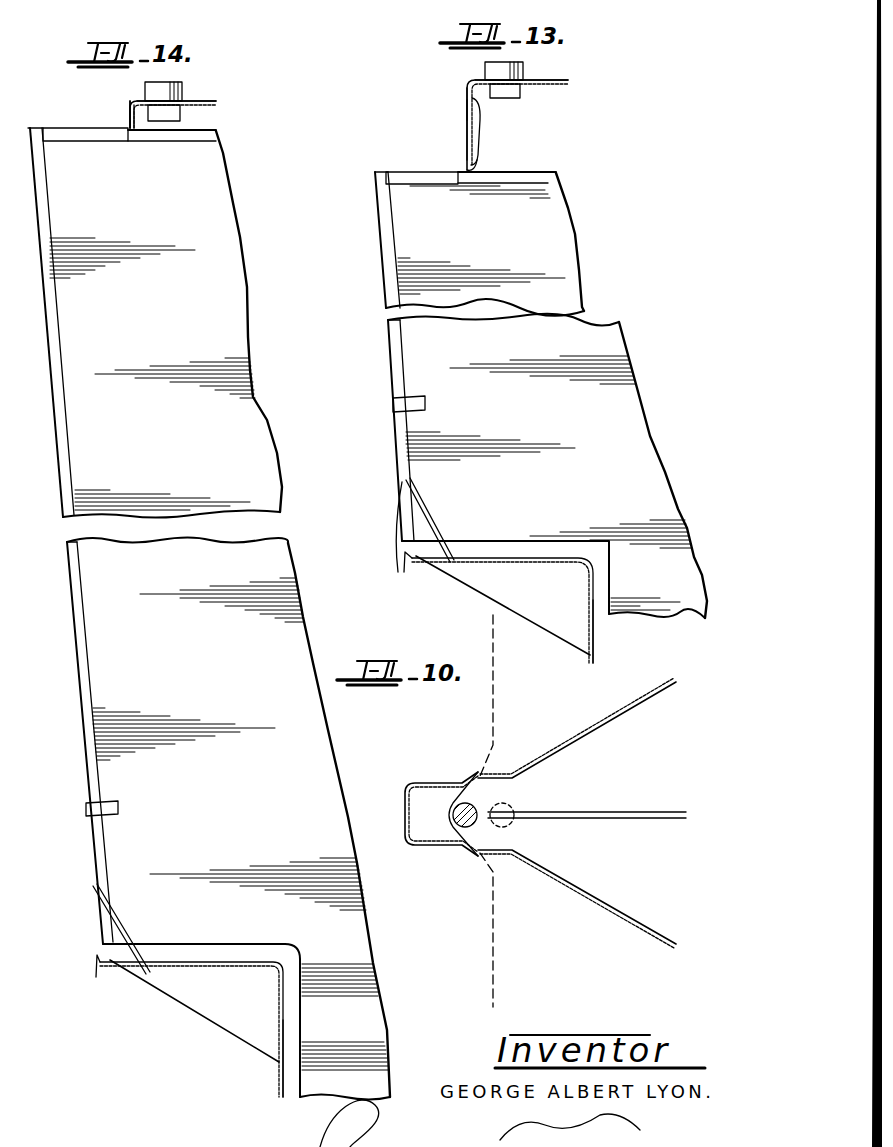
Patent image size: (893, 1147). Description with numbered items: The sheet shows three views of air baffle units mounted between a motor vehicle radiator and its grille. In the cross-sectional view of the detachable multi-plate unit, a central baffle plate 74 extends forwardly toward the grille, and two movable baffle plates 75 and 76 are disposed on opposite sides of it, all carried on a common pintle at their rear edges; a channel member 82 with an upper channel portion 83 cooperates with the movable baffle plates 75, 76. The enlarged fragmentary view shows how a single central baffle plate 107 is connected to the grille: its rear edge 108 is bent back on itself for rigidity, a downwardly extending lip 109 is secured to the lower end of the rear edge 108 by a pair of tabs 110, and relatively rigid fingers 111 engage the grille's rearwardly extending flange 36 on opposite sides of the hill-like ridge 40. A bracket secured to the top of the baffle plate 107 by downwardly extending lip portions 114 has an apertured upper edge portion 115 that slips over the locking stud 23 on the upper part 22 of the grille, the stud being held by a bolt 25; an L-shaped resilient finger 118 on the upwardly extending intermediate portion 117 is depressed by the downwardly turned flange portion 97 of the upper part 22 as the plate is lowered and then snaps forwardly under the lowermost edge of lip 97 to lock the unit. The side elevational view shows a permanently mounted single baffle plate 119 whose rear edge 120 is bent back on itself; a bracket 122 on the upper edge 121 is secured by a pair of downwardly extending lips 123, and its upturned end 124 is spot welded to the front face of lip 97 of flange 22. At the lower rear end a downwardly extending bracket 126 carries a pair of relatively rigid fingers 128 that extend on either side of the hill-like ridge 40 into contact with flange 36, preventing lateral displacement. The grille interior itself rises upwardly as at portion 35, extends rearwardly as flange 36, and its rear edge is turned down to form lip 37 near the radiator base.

In FIG. 14, the upper part of grille 22 is at (215, 101).
In FIG. 13, the upper part of grille 22 is at (566, 82).
In FIG. 14, the locking stud 23 is at (181, 88).
In FIG. 13, the locking stud 23 is at (524, 70).
In FIG. 14, the bolt 25 is at (185, 115).
In FIG. 13, the bolt 25 is at (512, 92).
In FIG. 14, the upwardly extending portion of grille 35 is at (280, 1074).
In FIG. 13, the upwardly extending portion of grille 35 is at (596, 640).
In FIG. 14, the rearwardly extending flange 36 is at (172, 996).
In FIG. 13, the rearwardly extending flange 36 is at (476, 578).
In FIG. 14, the lip 37 is at (108, 976).
In FIG. 13, the lip 37 is at (415, 572).
In FIG. 14, the hill-like ridge 40 is at (205, 967).
In FIG. 13, the hill-like ridge 40 is at (530, 565).
In FIG. 10, the central baffle plate 74 is at (620, 813).
In FIG. 10, the movable baffle plate 75 is at (575, 880).
In FIG. 10, the movable baffle plate 76 is at (497, 718).
In FIG. 10, the channel member 82 is at (402, 805).
In FIG. 10, the upper channel portion 83 is at (470, 790).
In FIG. 14, the downwardly turned flange portion 97 is at (130, 112).
In FIG. 13, the downwardly turned flange portion 97 is at (478, 96).
In FIG. 13, the single central baffle plate 107 is at (632, 413).
In FIG. 13, the rear edge 108 is at (386, 256).
In FIG. 13, the downwardly extending lip 109 is at (400, 542).
In FIG. 13, the tab 110 is at (412, 398).
In FIG. 13, the relatively rigid finger 111 is at (430, 525).
In FIG. 13, the downwardly extending lip portion 114 is at (412, 173).
In FIG. 13, the upper edge portion 115 is at (470, 82).
In FIG. 13, the upwardly extending intermediate portion 117 is at (467, 130).
In FIG. 13, the L-shaped resilient finger 118 is at (479, 134).
In FIG. 14, the single baffle plate 119 is at (120, 668).
In FIG. 14, the rear edge 120 is at (68, 606).
In FIG. 14, the upper edge 121 is at (140, 133).
In FIG. 14, the bracket 122 is at (101, 124).
In FIG. 14, the downwardly extending lip 123 is at (85, 143).
In FIG. 14, the upturned end 124 is at (140, 120).
In FIG. 14, the downwardly extending bracket 126 is at (90, 872).
In FIG. 14, the relatively rigid finger 128 is at (122, 928).